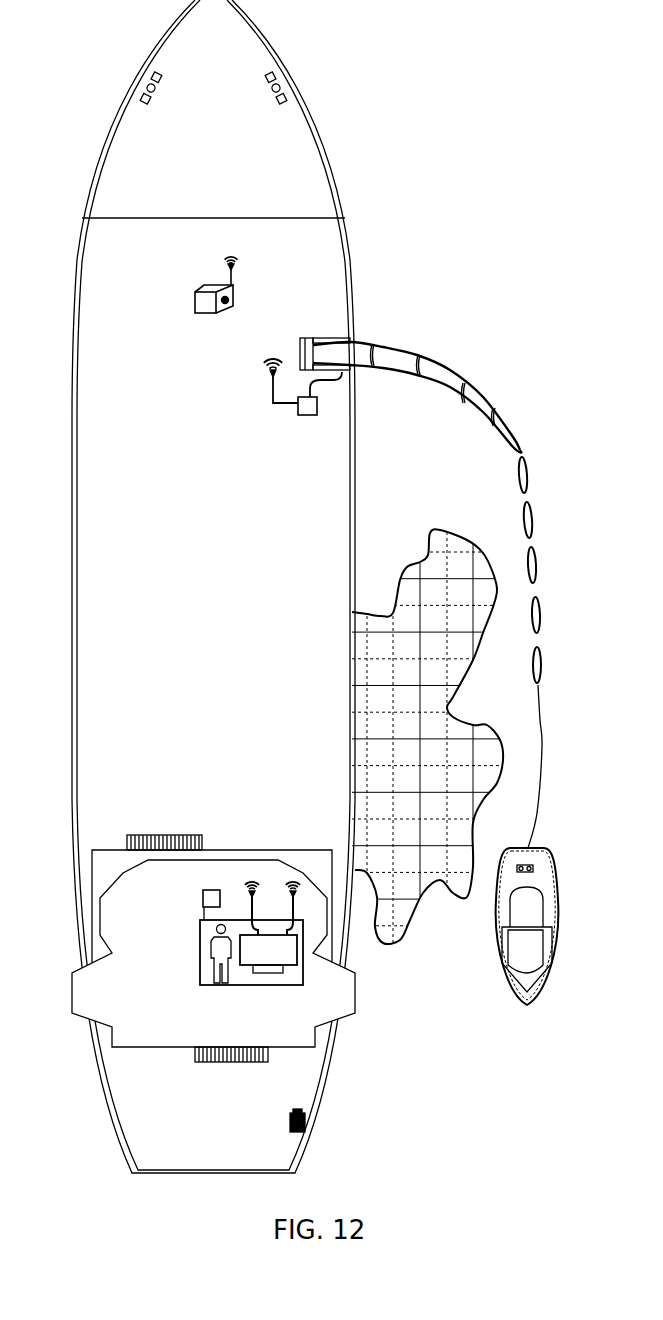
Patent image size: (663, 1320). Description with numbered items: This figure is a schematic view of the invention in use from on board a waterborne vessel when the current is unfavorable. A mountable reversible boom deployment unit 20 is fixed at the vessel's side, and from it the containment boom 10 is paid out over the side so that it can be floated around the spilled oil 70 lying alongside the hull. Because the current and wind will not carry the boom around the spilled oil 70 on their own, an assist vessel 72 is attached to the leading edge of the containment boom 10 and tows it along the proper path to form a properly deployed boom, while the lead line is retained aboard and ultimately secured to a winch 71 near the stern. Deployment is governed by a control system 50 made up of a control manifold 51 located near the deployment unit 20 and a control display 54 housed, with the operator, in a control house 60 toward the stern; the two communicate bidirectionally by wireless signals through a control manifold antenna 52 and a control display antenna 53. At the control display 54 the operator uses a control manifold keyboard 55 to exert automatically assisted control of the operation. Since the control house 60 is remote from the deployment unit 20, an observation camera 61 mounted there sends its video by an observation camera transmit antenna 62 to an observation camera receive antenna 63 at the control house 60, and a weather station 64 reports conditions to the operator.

The containment boom 10 is at (494, 377).
The mountable reversible boom deployment unit 20 is at (318, 322).
The control system 50 is at (261, 405).
The control manifold 51 is at (304, 412).
The control manifold antenna 52 is at (268, 373).
The control display antenna 53 is at (292, 896).
The control display 54 is at (282, 960).
The control manifold keyboard 55 is at (268, 973).
The control house 60 is at (220, 948).
The observation camera 61 is at (198, 297).
The observation camera transmit antenna 62 is at (226, 264).
The observation camera receive antenna 63 is at (251, 896).
The weather station 64 is at (203, 894).
The spilled oil 70 is at (410, 733).
The winch 71 is at (290, 1121).
The assist vessel 72 is at (481, 985).